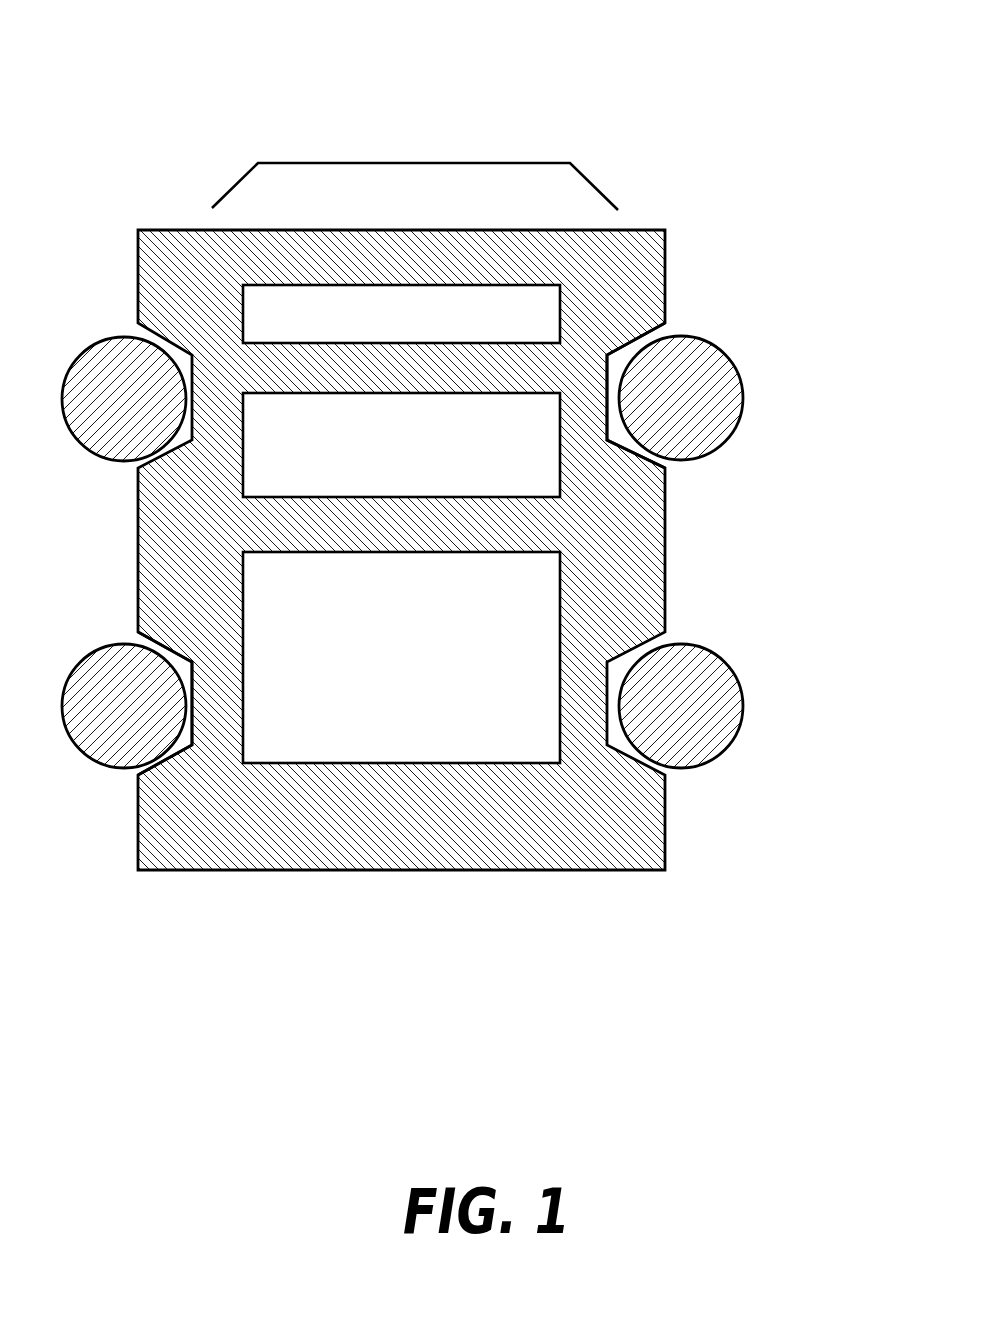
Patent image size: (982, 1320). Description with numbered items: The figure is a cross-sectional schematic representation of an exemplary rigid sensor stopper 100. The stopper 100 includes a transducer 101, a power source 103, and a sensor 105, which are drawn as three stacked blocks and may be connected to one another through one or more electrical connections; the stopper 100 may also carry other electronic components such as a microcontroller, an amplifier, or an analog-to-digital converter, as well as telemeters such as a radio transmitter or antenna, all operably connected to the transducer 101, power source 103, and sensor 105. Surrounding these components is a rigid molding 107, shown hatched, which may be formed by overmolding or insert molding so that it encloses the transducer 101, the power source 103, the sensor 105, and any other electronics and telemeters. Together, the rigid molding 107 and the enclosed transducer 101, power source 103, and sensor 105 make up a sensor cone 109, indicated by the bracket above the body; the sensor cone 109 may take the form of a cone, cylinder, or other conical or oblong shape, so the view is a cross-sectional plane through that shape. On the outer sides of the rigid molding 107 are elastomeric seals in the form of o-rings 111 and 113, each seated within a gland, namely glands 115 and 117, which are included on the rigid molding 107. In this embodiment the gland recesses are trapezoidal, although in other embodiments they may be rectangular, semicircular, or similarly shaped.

The rigid sensor stopper 100 is at (540, 26).
The transducer 101 is at (552, 295).
The power source 103 is at (540, 747).
The sensor 105 is at (542, 463).
The rigid molding 107 is at (543, 830).
The sensor cone 109 is at (407, 163).
The o-ring 111 is at (705, 352).
The o-ring 113 is at (83, 742).
The gland 115 is at (617, 363).
The gland 117 is at (180, 745).